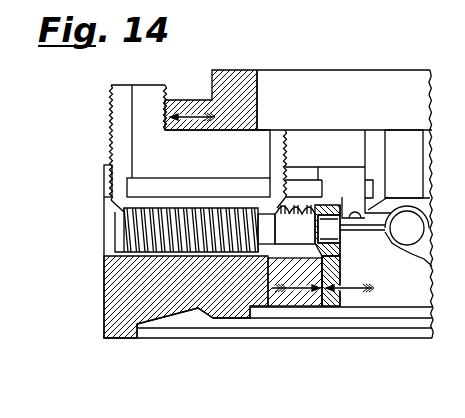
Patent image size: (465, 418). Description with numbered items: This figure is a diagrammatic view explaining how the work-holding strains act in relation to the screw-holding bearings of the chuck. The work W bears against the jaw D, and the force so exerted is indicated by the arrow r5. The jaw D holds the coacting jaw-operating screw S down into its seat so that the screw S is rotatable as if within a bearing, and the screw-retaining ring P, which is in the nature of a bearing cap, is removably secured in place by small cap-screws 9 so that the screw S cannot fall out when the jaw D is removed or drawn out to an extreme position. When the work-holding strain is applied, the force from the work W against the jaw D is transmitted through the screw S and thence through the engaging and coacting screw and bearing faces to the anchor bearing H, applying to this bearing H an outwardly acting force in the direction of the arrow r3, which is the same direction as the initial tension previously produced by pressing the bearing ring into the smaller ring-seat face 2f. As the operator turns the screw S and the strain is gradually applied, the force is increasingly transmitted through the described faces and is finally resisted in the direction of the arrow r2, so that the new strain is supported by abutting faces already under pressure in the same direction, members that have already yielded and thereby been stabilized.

The jaw D is at (116, 150).
The arrow r5 is at (186, 115).
The work W is at (288, 78).
The jaw-operating screw S is at (130, 212).
The cap-screw 9 is at (354, 210).
The ring-seat face 2f is at (345, 275).
The screw-retaining ring P is at (440, 267).
The bearing H is at (250, 320).
The arrow r2 is at (295, 303).
The arrow r3 is at (358, 306).